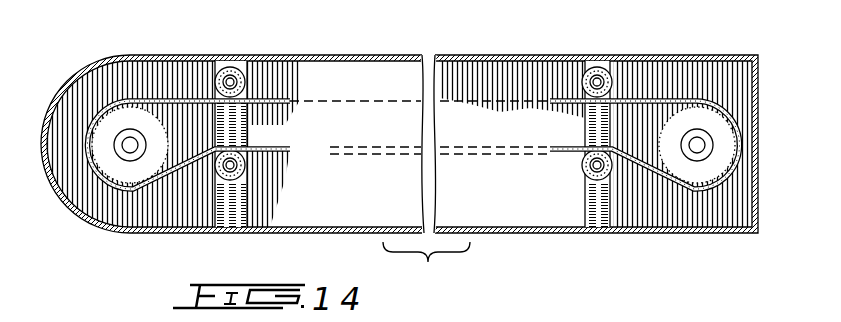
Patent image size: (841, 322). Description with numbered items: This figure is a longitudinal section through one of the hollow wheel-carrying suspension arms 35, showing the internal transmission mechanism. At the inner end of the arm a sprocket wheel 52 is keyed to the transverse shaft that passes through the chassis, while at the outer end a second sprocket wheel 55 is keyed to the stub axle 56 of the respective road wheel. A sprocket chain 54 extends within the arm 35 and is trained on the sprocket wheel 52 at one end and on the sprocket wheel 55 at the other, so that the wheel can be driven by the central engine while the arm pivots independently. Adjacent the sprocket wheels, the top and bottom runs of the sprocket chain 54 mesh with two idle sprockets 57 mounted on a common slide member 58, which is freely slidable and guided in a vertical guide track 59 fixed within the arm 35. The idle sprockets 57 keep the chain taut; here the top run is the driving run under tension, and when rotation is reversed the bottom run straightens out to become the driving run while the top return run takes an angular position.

The suspension arm 35 is at (509, 235).
The sprocket wheel 52 is at (118, 170).
The sprocket chain 54 is at (270, 100).
The sprocket wheel 55 is at (690, 122).
The stub axle 56 is at (131, 150).
The idle sprocket 57 is at (241, 60).
The slide member 58 is at (233, 126).
The guide track 59 is at (212, 125).